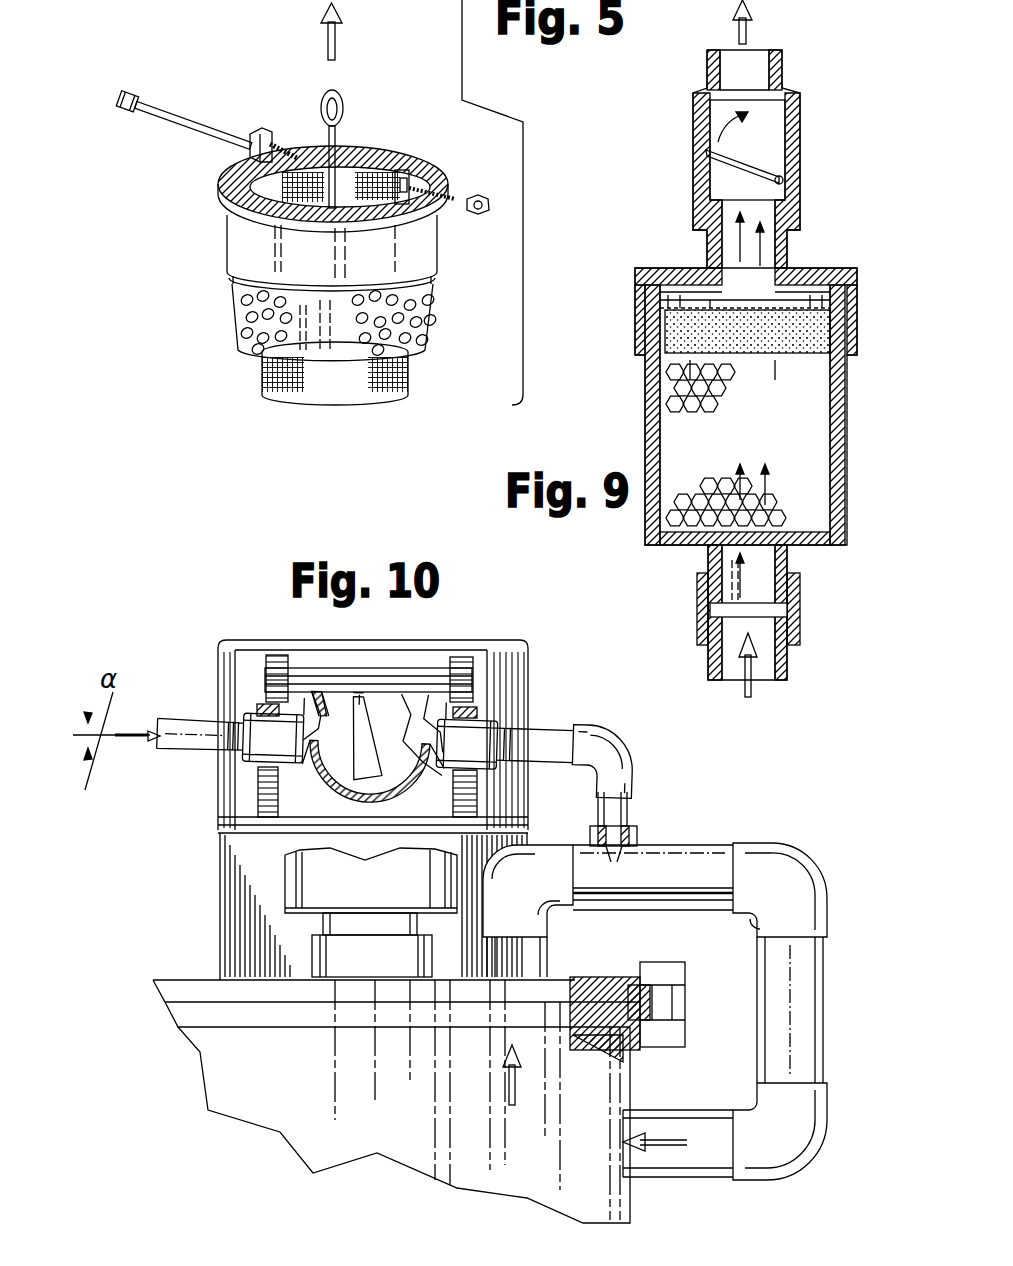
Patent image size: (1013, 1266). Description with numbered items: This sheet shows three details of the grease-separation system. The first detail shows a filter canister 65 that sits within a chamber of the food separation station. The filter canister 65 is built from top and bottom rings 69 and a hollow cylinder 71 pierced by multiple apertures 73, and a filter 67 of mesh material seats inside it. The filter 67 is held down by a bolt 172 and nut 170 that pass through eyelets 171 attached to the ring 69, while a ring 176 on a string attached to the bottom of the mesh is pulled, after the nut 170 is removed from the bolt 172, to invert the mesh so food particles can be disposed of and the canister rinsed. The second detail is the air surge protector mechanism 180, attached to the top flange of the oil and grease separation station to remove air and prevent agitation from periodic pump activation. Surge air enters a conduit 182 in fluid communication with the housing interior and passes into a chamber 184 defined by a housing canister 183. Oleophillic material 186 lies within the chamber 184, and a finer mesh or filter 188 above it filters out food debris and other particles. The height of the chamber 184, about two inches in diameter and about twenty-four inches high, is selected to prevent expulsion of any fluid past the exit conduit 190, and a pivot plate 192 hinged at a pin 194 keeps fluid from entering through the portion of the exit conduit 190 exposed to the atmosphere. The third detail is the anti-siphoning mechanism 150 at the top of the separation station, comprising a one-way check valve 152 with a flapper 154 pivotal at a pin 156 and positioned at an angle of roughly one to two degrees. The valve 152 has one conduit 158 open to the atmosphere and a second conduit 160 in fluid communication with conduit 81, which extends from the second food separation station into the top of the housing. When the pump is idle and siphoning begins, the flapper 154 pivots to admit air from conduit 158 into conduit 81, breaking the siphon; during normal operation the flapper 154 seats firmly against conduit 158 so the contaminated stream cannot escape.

In FIG. 5, the filter canister 65 is at (226, 305).
In FIG. 5, the filter 67 is at (377, 150).
In FIG. 5, the top and bottom rings 69 is at (227, 250).
In FIG. 5, the hollow cylinder 71 is at (356, 346).
In FIG. 5, the apertures 73 is at (423, 300).
In FIG. 5, the nut 170 is at (478, 196).
In FIG. 5, the eyelets 171 is at (263, 127).
In FIG. 5, the bolt 172 is at (162, 127).
In FIG. 5, the ring 176 is at (337, 84).
In FIG. 9, the air surge protector mechanism 180 is at (745, 365).
In FIG. 9, the conduit 182 is at (763, 573).
In FIG. 9, the housing canister 183 is at (847, 507).
In FIG. 9, the chamber 184 is at (788, 442).
In FIG. 9, the oleophillic material 186 is at (660, 385).
In FIG. 9, the finer mesh or filter 188 is at (820, 343).
In FIG. 9, the exit conduit 190 is at (757, 68).
In FIG. 9, the pivot plate 192 is at (745, 158).
In FIG. 9, the pin 194 is at (783, 180).
In FIG. 10, the anti-siphoning mechanism 150 is at (520, 633).
In FIG. 10, the one-way check valve 152 is at (338, 718).
In FIG. 10, the flapper 154 is at (383, 733).
In FIG. 10, the pin 156 is at (367, 727).
In FIG. 10, the conduit 158 is at (196, 722).
In FIG. 10, the second conduit 160 is at (550, 733).
In FIG. 10, the conduit 81 is at (698, 868).